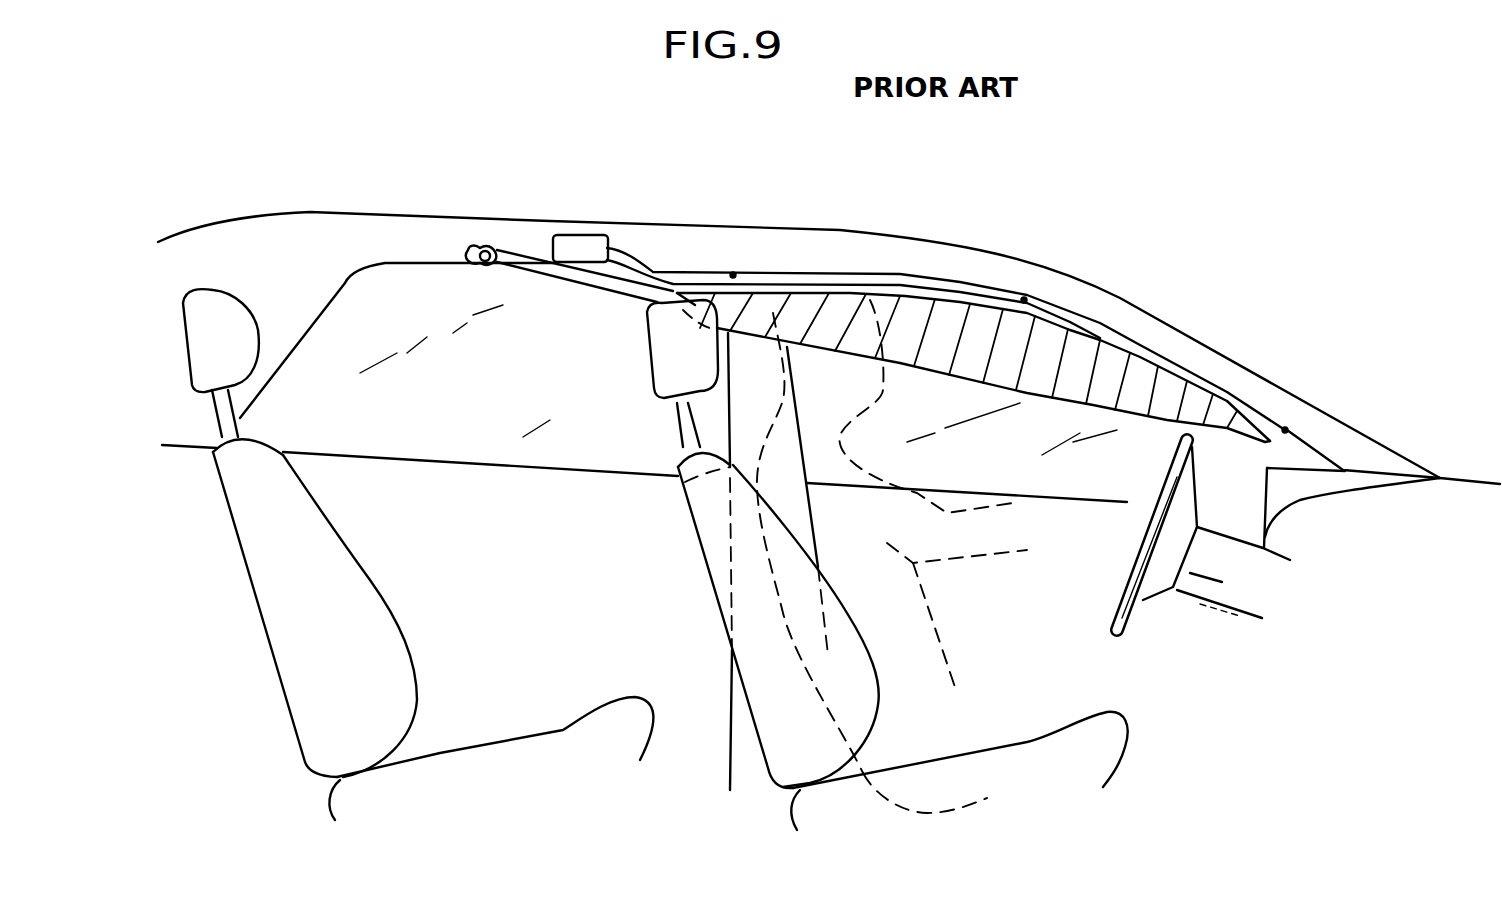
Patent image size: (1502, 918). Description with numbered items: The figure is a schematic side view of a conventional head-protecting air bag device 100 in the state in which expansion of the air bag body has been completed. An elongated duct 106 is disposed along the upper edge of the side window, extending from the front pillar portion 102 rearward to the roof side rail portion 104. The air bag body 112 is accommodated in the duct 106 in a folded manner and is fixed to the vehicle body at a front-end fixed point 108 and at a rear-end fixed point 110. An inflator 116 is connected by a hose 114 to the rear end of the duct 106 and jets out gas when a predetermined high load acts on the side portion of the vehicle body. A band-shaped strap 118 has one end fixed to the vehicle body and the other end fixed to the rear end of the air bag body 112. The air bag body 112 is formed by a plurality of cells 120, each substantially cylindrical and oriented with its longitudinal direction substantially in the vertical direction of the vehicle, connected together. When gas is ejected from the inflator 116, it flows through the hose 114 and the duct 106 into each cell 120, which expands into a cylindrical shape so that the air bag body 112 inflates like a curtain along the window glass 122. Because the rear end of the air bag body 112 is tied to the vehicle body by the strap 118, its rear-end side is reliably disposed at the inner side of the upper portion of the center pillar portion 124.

The head-protecting air bag device 100 is at (1118, 258).
The front pillar portion 102 is at (1203, 352).
The roof side rail portion 104 is at (845, 252).
The duct 106 is at (717, 278).
The front-end fixed point 108 is at (1285, 430).
The rear-end fixed point 110 is at (733, 273).
The air bag body 112 is at (1023, 317).
The hose 114 is at (647, 272).
The inflator 116 is at (582, 245).
The strap 118 is at (512, 257).
The cells 120 is at (957, 320).
The window glass 122 is at (1047, 472).
The center pillar portion 124 is at (743, 397).